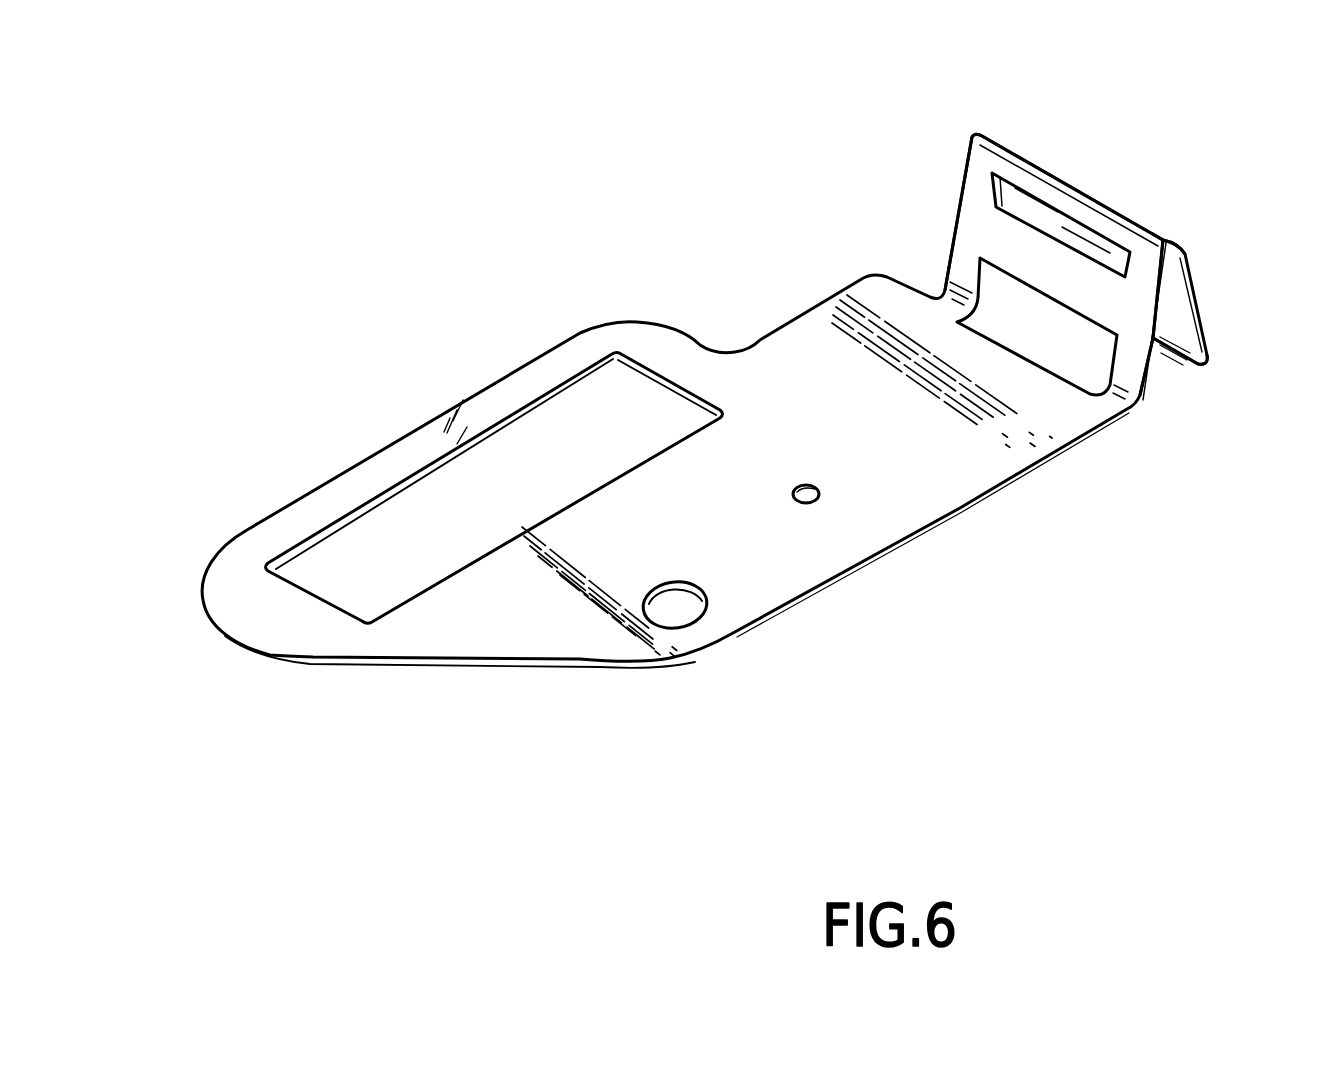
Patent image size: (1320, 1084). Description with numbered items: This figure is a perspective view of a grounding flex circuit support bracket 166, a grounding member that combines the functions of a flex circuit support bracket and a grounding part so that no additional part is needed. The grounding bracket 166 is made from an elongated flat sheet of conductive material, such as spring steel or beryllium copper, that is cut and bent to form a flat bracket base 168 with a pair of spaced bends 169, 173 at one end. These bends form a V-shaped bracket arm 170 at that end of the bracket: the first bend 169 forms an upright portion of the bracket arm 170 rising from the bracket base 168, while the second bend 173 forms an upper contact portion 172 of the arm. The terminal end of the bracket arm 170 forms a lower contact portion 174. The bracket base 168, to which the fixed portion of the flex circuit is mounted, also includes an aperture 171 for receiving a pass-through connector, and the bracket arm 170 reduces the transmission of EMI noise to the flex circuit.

The grounding flex circuit support bracket 166 is at (573, 285).
The bracket base 168 is at (787, 587).
The first bend 169 is at (1137, 403).
The bracket arm 170 is at (1208, 240).
The aperture 171 is at (344, 550).
The upper contact portion 172 is at (968, 142).
The second bend 173 is at (1163, 240).
The lower contact portion 174 is at (1180, 366).